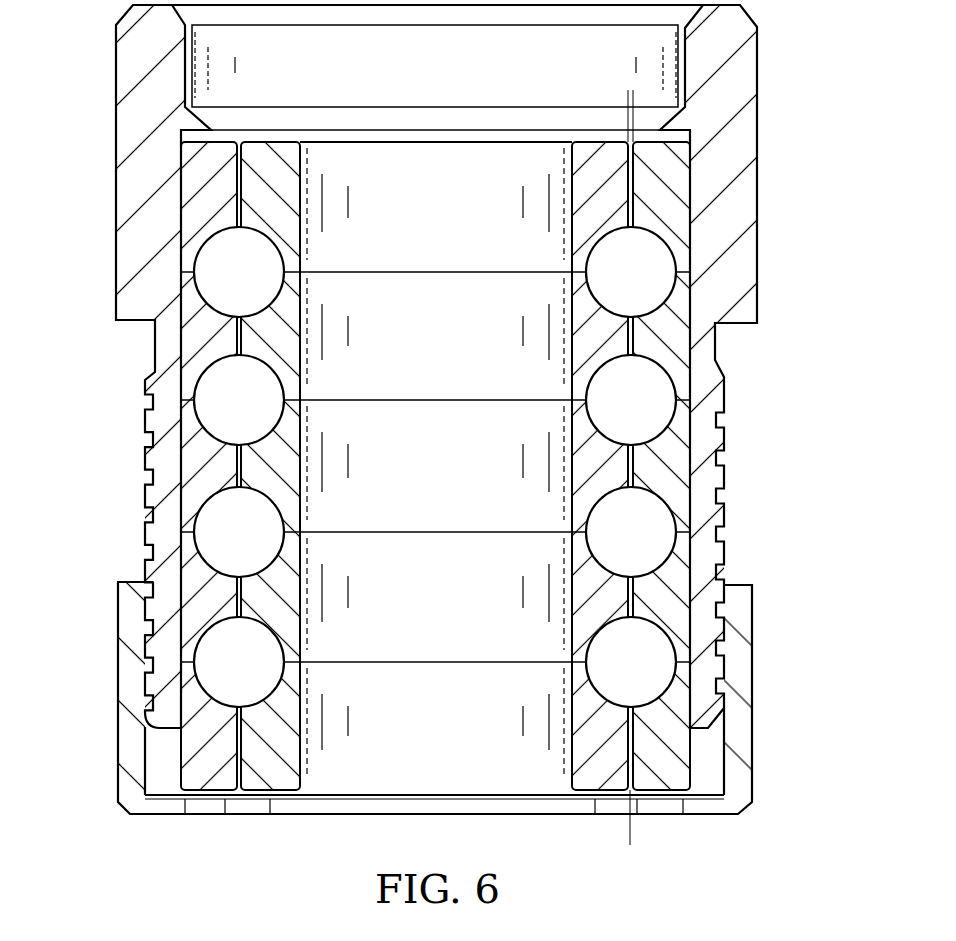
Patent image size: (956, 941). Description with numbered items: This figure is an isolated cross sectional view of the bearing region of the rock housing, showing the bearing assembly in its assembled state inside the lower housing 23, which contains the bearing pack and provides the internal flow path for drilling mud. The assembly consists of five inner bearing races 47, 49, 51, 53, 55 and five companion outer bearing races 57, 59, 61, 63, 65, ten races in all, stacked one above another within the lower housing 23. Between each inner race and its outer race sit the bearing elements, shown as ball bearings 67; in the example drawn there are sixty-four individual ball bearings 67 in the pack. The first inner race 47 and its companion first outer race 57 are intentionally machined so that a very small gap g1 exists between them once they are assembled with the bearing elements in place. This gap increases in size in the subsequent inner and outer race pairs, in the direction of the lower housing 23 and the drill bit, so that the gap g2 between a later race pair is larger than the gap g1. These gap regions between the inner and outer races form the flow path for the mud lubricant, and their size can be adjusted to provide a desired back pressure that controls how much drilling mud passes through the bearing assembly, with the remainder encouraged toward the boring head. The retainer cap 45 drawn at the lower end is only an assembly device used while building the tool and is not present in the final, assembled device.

The lower housing 23 is at (747, 137).
The retainer cap 45 is at (742, 730).
The first inner race 47 is at (290, 740).
The inner bearing race 49 is at (290, 610).
The inner bearing race 51 is at (290, 477).
The inner bearing race 53 is at (290, 313).
The inner bearing race 55 is at (292, 177).
The first outer race 57 is at (218, 777).
The outer bearing race 59 is at (195, 610).
The outer bearing race 61 is at (192, 470).
The outer bearing race 63 is at (198, 348).
The outer bearing race 65 is at (200, 180).
The ball bearing 67 is at (255, 678).
The gap g1 is at (665, 838).
The gap g2 is at (670, 95).